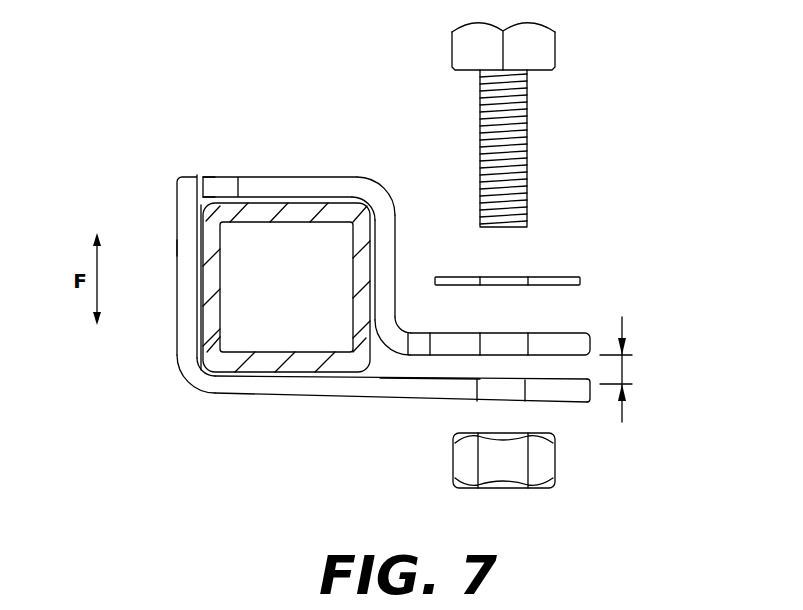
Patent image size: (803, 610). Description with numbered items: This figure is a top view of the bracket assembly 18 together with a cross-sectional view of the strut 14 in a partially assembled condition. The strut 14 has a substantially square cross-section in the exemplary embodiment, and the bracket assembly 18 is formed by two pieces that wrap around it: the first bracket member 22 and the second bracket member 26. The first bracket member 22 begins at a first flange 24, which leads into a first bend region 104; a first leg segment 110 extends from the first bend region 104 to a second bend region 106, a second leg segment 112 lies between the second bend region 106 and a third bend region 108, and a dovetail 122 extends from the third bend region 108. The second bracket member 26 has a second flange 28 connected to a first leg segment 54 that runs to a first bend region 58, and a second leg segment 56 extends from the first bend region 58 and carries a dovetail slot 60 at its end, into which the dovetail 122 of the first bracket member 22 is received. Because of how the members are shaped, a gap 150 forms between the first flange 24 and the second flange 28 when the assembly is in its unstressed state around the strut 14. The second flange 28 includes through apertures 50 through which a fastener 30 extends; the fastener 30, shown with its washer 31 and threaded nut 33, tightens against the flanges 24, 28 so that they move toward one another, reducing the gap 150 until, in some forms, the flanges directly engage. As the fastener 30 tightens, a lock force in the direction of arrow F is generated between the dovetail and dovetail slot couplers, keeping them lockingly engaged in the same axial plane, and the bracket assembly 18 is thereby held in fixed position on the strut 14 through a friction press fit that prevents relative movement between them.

The strut 14 is at (280, 226).
The bracket assembly 18 is at (374, 357).
The first bracket member 22 is at (414, 250).
The first flange 24 is at (580, 333).
The second bracket member 26 is at (292, 412).
The second flange 28 is at (590, 402).
The fastener 30 is at (555, 52).
The washer 31 is at (568, 277).
The threaded nut 33 is at (538, 458).
The through apertures 50 is at (505, 333).
The first leg segment 54 is at (400, 404).
The second leg segment 56 is at (172, 325).
The first bend region 58 is at (187, 381).
The dovetail slot 60 is at (152, 248).
The first bend region 104 is at (397, 327).
The second bend region 106 is at (390, 178).
The third bend region 108 is at (209, 177).
The first leg segment 110 is at (396, 260).
The second leg segment 112 is at (288, 177).
The dovetail 122 is at (175, 222).
The gap 150 is at (623, 367).